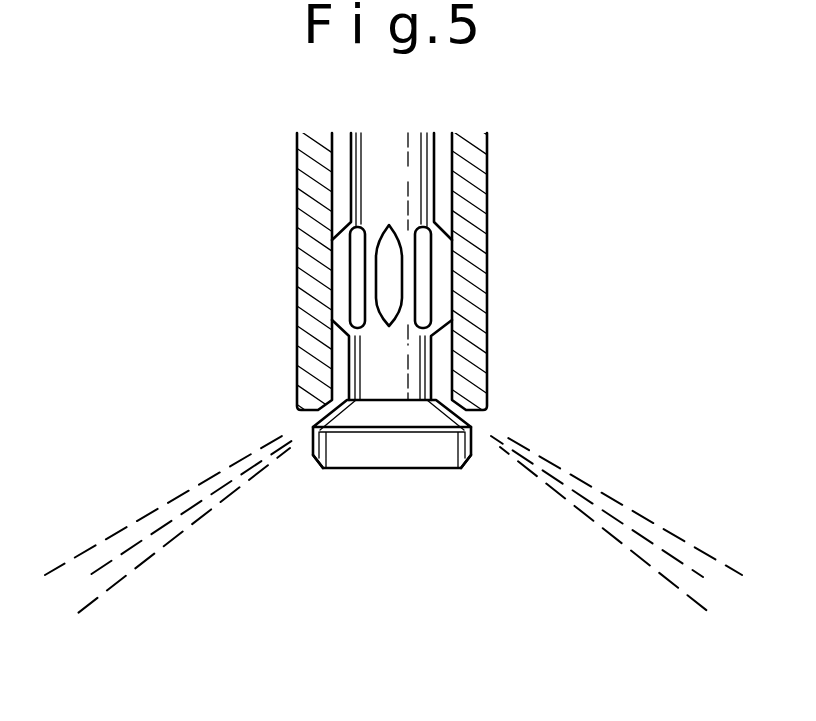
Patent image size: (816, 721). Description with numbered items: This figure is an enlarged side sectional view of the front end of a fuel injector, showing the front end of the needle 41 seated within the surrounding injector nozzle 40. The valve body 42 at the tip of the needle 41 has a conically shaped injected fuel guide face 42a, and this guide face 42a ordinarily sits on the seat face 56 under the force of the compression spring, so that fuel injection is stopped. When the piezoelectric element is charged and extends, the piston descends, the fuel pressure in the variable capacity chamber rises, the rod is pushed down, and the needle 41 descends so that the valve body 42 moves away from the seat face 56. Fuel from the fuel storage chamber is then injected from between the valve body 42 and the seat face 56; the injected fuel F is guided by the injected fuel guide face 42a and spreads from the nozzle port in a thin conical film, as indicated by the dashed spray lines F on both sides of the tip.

The nozzle body 40 is at (475, 188).
The needle 41 is at (372, 178).
The valve body 42 is at (412, 427).
The injected fuel guide face 42a is at (444, 428).
The seat face 56 is at (345, 405).
The injected fuel F is at (622, 502).